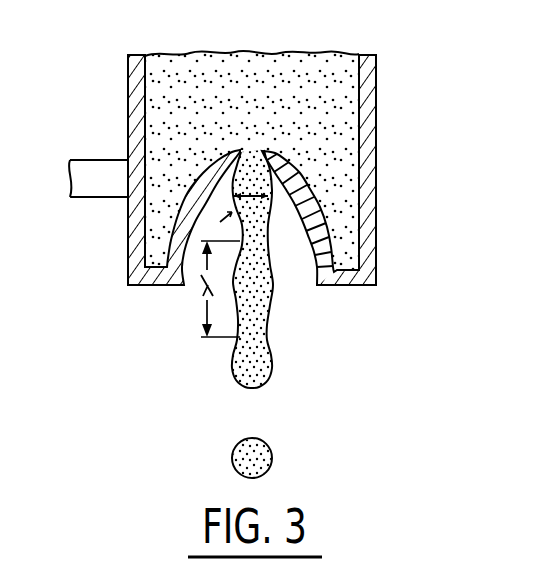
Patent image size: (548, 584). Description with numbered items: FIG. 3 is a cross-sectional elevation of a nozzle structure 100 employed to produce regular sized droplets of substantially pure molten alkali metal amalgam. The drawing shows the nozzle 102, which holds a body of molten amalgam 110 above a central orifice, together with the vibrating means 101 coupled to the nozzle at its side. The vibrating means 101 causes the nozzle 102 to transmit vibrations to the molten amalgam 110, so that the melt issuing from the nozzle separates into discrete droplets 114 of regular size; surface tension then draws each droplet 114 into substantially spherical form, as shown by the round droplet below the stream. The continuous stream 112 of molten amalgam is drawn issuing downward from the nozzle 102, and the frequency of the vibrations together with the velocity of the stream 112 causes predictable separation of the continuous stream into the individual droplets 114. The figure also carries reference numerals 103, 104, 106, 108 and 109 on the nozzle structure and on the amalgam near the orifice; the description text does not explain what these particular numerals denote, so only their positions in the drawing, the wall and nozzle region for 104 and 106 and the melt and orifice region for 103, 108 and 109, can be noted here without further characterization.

The nozzle structure 100 is at (399, 127).
The vibrating means 101 is at (97, 159).
The nozzle 102 is at (376, 210).
The ink body 103 is at (255, 72).
The nozzle member 104 is at (374, 257).
The nozzle arm 106 is at (200, 173).
The orifice 108 is at (256, 155).
The orifice lip 109 is at (240, 150).
The molten amalgam 110 is at (128, 241).
The stream of molten amalgam 112 is at (258, 231).
The droplets 114 is at (258, 450).